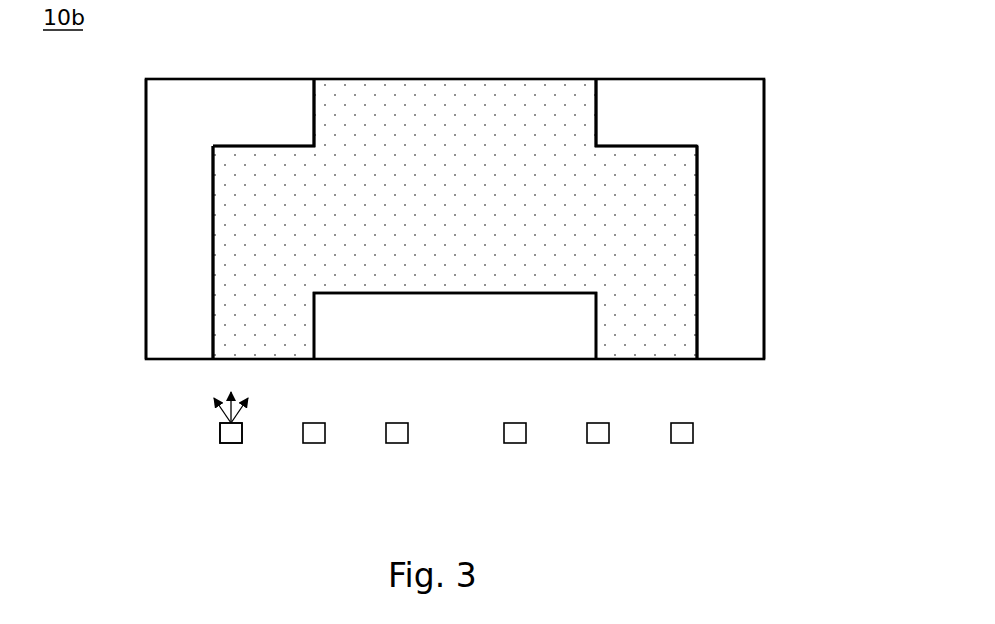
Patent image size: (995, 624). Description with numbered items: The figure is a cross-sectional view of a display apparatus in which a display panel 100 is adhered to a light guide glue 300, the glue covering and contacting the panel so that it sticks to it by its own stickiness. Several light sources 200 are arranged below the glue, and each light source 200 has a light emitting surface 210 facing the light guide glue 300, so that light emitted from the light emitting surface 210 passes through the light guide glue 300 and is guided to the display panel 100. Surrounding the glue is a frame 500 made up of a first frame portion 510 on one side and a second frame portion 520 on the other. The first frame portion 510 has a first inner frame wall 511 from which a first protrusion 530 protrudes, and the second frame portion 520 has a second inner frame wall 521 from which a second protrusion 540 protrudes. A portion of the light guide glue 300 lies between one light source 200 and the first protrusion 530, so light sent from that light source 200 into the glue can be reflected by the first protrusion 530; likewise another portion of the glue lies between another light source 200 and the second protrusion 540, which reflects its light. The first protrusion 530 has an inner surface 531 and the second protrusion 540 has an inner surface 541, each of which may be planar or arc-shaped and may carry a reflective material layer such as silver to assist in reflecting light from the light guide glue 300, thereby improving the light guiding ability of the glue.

The display panel 100 is at (475, 340).
The light sources 200 is at (397, 443).
The light emitting surface 210 is at (219, 433).
The light guide glue 300 is at (450, 95).
The frame 500 is at (122, 143).
The first frame portion 510 is at (155, 220).
The first inner frame wall 511 is at (213, 272).
The second frame portion 520 is at (754, 220).
The second inner frame wall 521 is at (697, 270).
The first protrusion 530 is at (264, 98).
The inner surface of the first protrusion 531 is at (231, 140).
The second protrusion 540 is at (648, 98).
The inner surface of the second protrusion 541 is at (680, 140).